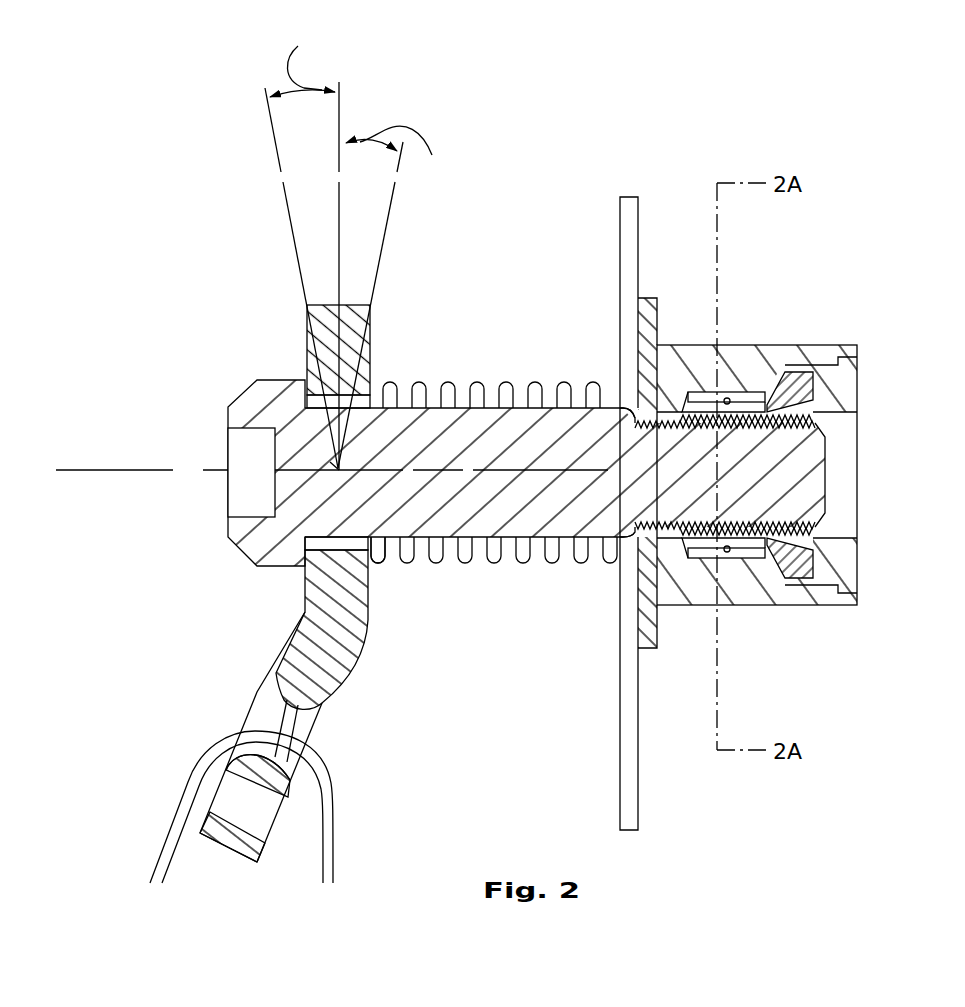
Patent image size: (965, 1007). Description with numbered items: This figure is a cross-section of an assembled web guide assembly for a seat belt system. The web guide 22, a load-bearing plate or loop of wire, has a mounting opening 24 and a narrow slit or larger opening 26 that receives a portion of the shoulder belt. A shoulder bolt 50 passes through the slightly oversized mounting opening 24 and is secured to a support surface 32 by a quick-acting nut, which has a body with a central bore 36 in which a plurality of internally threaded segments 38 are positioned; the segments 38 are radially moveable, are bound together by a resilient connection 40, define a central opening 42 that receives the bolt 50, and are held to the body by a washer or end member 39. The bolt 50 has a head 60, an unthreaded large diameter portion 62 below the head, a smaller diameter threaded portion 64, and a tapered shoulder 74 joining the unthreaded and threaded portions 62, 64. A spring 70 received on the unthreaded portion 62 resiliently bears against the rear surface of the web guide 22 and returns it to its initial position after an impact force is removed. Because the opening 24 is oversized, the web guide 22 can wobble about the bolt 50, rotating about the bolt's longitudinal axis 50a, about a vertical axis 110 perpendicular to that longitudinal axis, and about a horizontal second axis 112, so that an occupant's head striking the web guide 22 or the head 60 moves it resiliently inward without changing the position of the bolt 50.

The web guide 22 is at (324, 306).
The mounting opening 24 is at (318, 545).
The narrow slit or larger opening 26 is at (346, 688).
The support surface 32 is at (637, 196).
The central bore 36 is at (722, 392).
The internally threaded segments 38 is at (763, 407).
The washer or end member 39 is at (858, 370).
The resilient connection 40 is at (725, 559).
The central opening 42 is at (816, 531).
The shoulder bolt 50 is at (451, 421).
The longitudinal axis 50a is at (162, 459).
The head 60 is at (236, 389).
The unthreaded large diameter portion 62 is at (392, 560).
The threaded portion 64 is at (817, 474).
The spring 70 is at (423, 379).
The tapered shoulder 74 is at (624, 529).
The vertical axis 110 is at (350, 82).
The horizontal second axis 112 is at (333, 466).